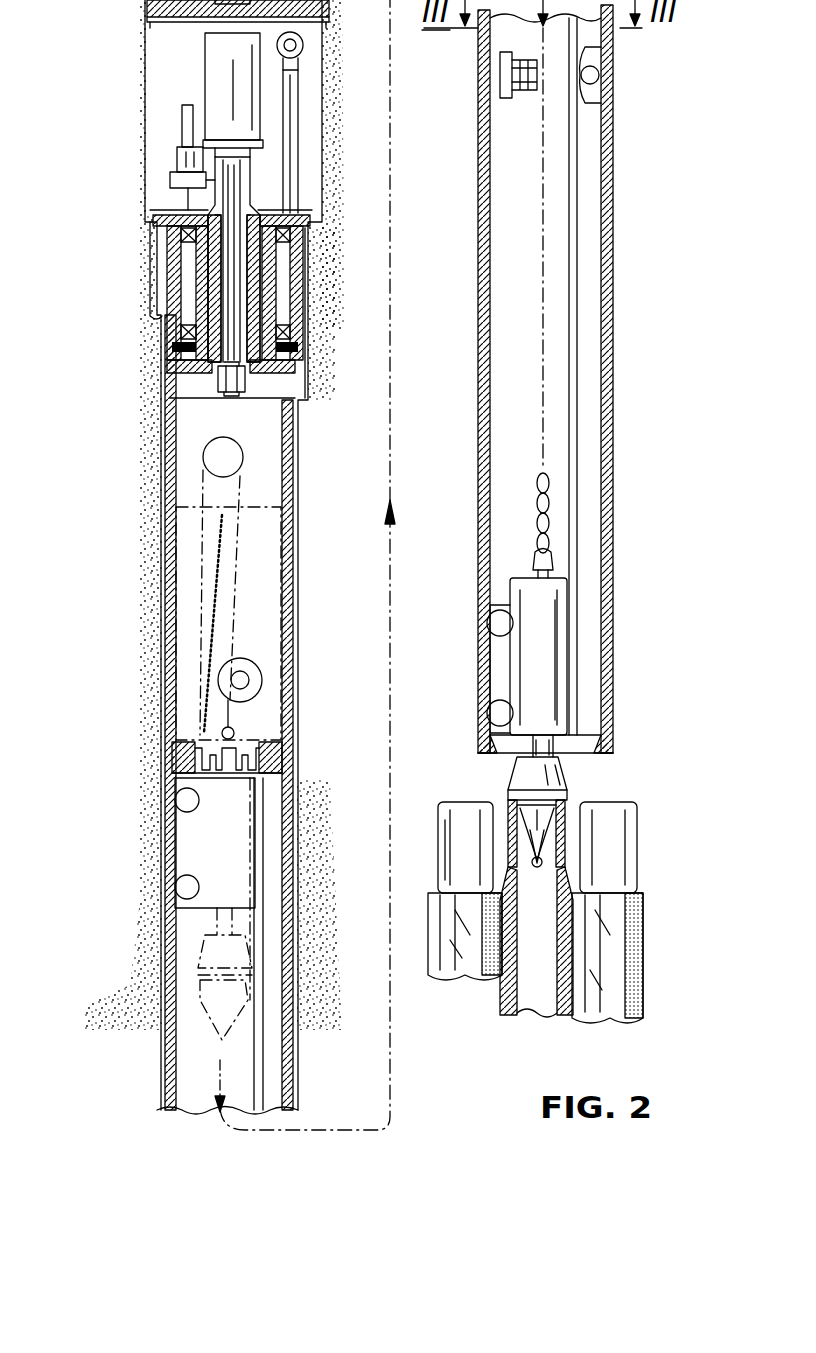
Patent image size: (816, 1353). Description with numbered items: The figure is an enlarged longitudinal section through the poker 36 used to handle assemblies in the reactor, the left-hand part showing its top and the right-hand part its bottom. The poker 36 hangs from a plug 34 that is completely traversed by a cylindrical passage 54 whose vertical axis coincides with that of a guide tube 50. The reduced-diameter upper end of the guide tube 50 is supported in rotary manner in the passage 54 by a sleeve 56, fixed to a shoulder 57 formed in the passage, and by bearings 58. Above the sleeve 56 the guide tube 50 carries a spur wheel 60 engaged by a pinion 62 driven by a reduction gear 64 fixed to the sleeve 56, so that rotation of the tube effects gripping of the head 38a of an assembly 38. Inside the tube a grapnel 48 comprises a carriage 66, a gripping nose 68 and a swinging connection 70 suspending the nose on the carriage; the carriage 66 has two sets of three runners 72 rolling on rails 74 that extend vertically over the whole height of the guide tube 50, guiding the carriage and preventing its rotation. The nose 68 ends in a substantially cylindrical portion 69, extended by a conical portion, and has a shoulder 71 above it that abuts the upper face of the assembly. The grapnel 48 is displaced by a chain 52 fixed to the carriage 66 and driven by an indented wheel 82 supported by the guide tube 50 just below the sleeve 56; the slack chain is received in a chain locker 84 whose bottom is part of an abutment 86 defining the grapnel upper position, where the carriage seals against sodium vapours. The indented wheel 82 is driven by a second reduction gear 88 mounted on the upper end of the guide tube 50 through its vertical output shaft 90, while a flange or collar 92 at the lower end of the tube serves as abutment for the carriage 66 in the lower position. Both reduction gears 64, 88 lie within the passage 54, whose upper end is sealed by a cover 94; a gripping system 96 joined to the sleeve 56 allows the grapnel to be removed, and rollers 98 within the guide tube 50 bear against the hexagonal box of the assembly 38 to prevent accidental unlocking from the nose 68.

The plug 34 is at (100, 496).
The poker 36 is at (618, 462).
The assembly 38 is at (500, 1000).
The head of assembly 38a is at (580, 858).
The grapnel 48 is at (576, 775).
The guide tube 50 is at (162, 1066).
The chain 52 is at (535, 495).
The cylindrical passage 54 is at (158, 318).
The sleeve 56 is at (170, 270).
The shoulder 57 is at (308, 222).
The bearings 58 is at (276, 288).
The spur wheel 60 is at (270, 200).
The pinion 62 is at (172, 188).
The reduction gear 64 is at (180, 160).
The carriage 66 is at (560, 617).
The gripping nose 68 is at (510, 772).
The cylindrical portion 69 is at (525, 850).
The swinging connection 70 is at (555, 735).
The shoulder 71 is at (520, 822).
The runners 72 is at (492, 705).
The rail 74 is at (262, 1036).
The indented wheel 82 is at (205, 450).
The chain locker 84 is at (208, 538).
The abutment 86 is at (172, 758).
The second reduction gear 88 is at (215, 60).
The vertical output shaft 90 is at (258, 378).
The flange or collar 92 is at (482, 745).
The cover 94 is at (180, 20).
The gripping system 96 is at (298, 96).
The rollers 98 is at (598, 115).